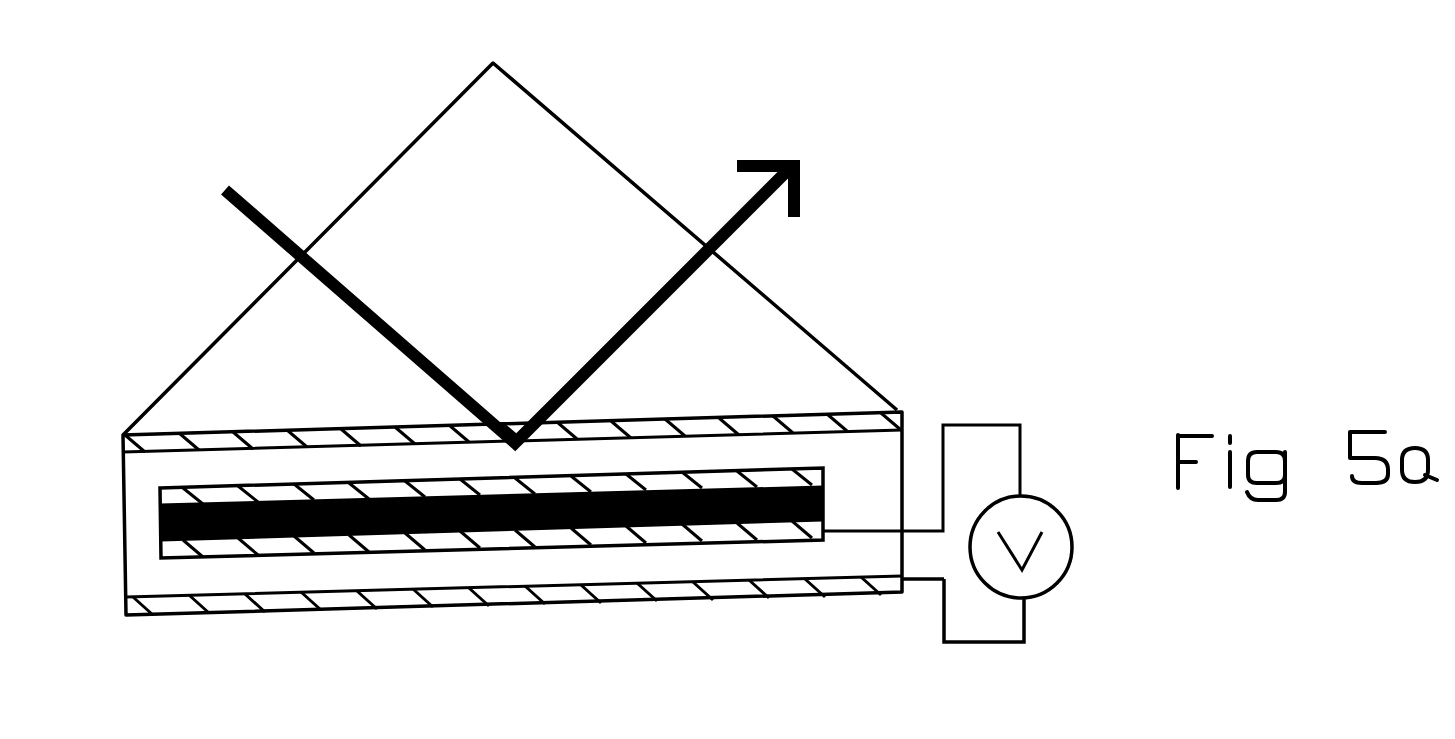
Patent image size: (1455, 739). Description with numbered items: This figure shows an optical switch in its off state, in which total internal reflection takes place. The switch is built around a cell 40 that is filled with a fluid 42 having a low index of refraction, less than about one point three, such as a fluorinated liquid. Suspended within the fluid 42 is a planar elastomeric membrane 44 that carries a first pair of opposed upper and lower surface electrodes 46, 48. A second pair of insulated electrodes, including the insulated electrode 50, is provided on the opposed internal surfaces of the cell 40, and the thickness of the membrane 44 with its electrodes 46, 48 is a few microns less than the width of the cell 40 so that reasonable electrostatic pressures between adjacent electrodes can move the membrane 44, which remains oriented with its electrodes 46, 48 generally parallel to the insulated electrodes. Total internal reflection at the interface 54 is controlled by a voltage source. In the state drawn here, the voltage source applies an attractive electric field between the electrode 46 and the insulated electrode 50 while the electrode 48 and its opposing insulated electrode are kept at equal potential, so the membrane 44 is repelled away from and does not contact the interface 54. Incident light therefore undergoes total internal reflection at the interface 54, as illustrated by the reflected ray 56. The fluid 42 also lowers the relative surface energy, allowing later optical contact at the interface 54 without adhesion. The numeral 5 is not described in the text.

The sample 5 is at (267, 438).
The cell 40 is at (397, 628).
The fluid 42 is at (868, 455).
The planar elastomeric membrane 44 is at (825, 505).
The upper surface electrode 46 is at (663, 537).
The lower surface electrode 48 is at (672, 470).
The insulated electrode 50 is at (225, 603).
The interface 54 is at (383, 440).
The reflected ray 56 is at (742, 246).